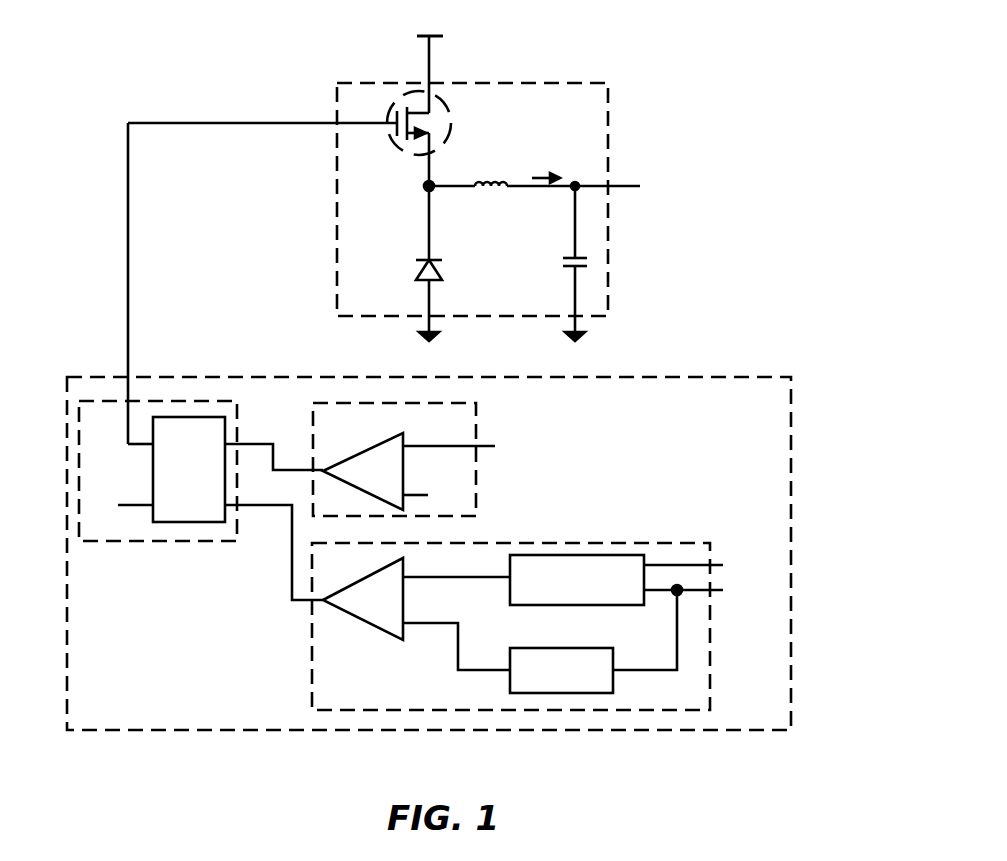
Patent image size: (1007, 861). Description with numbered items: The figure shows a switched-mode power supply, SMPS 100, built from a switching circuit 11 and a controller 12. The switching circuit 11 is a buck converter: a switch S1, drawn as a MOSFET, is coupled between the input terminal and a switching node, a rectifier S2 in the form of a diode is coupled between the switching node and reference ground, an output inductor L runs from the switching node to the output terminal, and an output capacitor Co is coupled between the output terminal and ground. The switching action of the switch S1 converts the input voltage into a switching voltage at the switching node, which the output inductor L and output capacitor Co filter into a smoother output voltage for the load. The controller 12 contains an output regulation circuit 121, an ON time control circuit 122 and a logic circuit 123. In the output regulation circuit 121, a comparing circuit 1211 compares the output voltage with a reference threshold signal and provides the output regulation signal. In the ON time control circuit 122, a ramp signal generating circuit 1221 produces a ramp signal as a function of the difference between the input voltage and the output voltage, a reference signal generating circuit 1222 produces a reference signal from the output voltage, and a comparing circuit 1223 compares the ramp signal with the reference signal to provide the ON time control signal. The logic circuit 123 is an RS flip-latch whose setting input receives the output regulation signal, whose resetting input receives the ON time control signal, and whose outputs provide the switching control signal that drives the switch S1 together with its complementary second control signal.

The SMPS 100 is at (752, 97).
The switching circuit 11 is at (609, 120).
The controller 12 is at (790, 377).
The output regulation circuit 121 is at (365, 427).
The comparing circuit 1211 is at (397, 481).
The ON time control circuit 122 is at (360, 697).
The ramp signal generating circuit 1221 is at (613, 554).
The reference signal generating circuit 1222 is at (613, 656).
The comparing circuit 1223 is at (393, 608).
The logic circuit 123 is at (192, 541).
The switch S1 is at (448, 114).
The rectifier S2 is at (415, 268).
The output inductor L is at (497, 181).
The output capacitor Co is at (562, 257).